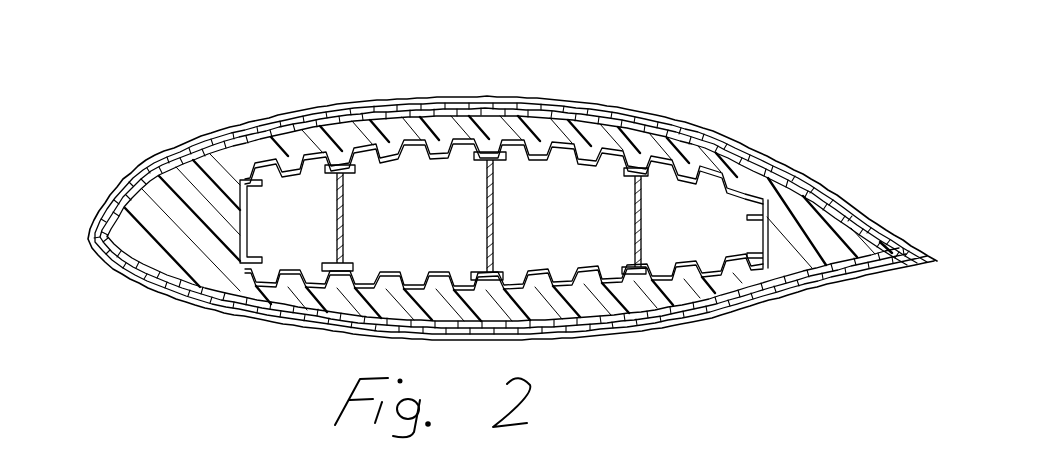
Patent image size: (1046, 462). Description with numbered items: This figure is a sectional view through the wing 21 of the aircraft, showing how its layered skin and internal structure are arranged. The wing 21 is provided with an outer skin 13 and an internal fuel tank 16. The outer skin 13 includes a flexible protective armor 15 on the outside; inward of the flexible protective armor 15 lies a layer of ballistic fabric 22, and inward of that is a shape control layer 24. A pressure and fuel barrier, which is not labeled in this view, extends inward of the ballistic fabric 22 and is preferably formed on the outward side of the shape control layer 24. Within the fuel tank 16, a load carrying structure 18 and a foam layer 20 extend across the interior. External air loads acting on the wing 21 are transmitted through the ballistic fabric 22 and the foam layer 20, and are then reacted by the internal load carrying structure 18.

The outer skin 13 is at (800, 170).
The flexible protective armor 15 is at (402, 99).
The internal fuel tank 16 is at (724, 150).
The load carrying structure 18 is at (345, 163).
The foam layer 20 is at (840, 222).
The wing 21 is at (190, 150).
The ballistic fabric 22 is at (523, 107).
The shape control layer 24 is at (614, 123).